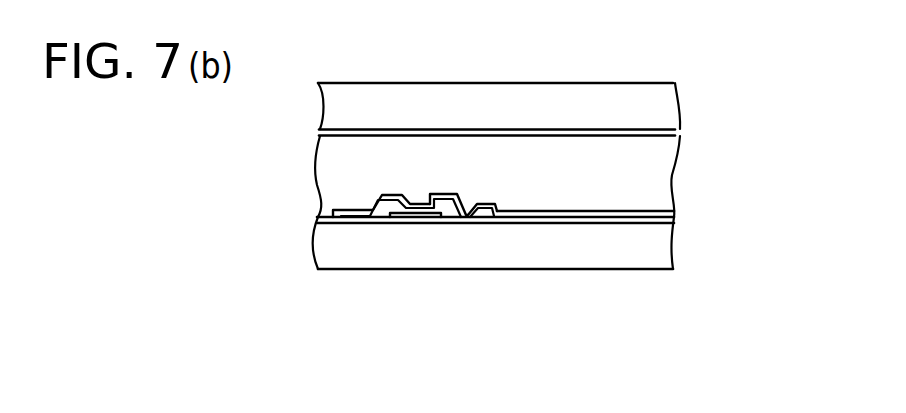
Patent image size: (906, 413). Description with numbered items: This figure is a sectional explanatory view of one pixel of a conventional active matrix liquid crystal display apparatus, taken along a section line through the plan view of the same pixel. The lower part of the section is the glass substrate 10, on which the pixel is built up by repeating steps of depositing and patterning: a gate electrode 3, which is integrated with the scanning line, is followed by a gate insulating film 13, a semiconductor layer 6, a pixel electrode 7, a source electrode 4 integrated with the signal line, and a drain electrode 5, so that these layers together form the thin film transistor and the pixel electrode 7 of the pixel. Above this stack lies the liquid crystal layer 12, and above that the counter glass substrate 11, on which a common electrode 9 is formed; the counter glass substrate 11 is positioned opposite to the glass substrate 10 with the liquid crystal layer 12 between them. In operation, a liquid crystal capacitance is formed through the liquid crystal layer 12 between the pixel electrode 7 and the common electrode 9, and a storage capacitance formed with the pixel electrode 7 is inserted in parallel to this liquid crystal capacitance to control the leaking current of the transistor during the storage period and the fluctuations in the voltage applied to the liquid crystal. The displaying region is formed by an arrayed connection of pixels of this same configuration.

The gate electrode 3 is at (402, 218).
The source electrode 4 is at (352, 213).
The drain electrode 5 is at (462, 220).
The semiconductor layer 6 is at (415, 220).
The pixel electrode 7 is at (672, 212).
The common electrode 9 is at (672, 133).
The glass substrate 10 is at (598, 252).
The counter glass substrate 11 is at (660, 105).
The liquid crystal layer 12 is at (658, 172).
The gate insulating film 13 is at (655, 226).